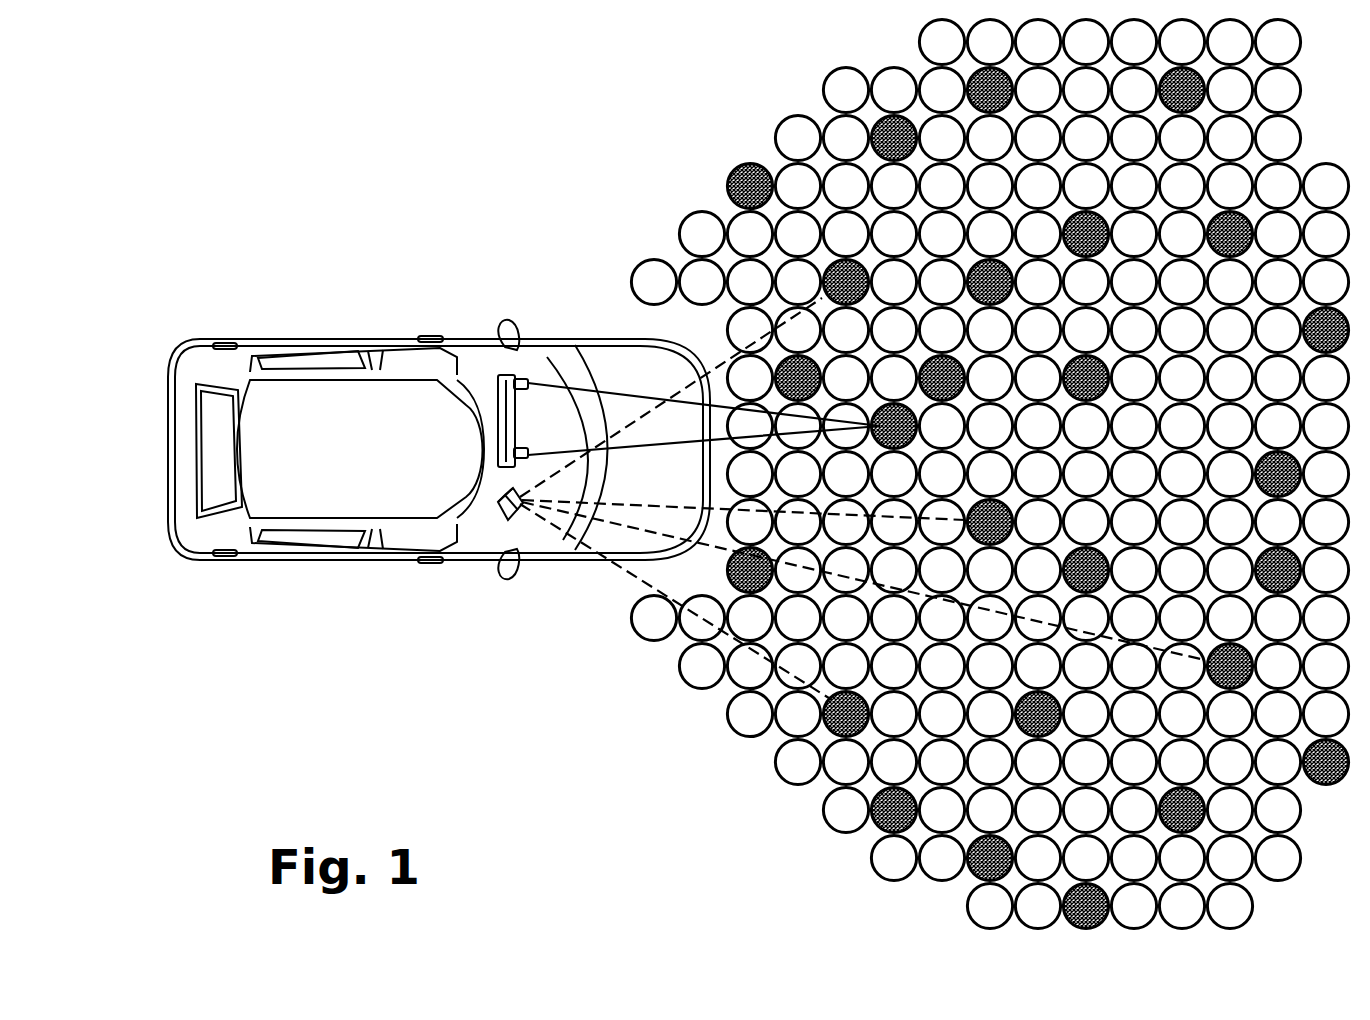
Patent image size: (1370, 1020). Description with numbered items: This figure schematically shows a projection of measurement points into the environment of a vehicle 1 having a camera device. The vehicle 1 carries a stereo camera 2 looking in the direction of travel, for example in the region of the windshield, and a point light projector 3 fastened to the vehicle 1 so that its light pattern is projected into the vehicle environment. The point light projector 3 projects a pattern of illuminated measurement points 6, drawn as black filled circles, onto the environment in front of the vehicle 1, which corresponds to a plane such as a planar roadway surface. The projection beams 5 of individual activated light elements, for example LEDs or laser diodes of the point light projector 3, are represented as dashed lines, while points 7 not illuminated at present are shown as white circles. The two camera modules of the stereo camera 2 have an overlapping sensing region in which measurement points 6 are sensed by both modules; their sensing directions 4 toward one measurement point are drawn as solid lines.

The vehicle 1 is at (311, 416).
The stereo camera 2 is at (462, 398).
The point light projector 3 is at (498, 518).
The sensing directions 4 is at (643, 432).
The projection beams 5 is at (630, 530).
The measurement points 6 is at (708, 592).
The points 7 is at (732, 737).